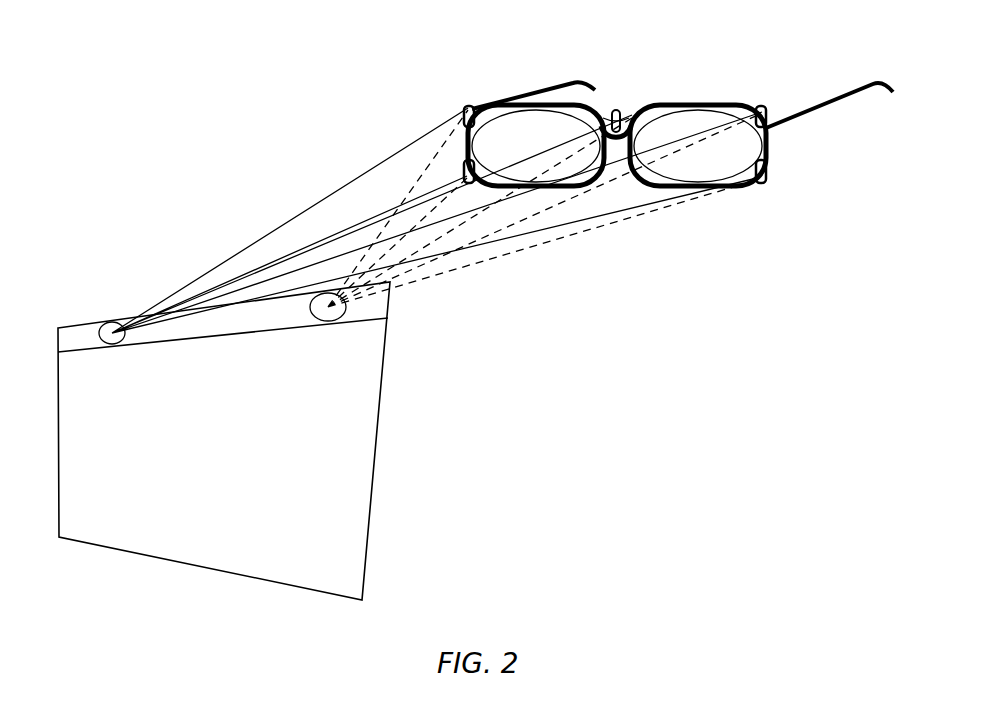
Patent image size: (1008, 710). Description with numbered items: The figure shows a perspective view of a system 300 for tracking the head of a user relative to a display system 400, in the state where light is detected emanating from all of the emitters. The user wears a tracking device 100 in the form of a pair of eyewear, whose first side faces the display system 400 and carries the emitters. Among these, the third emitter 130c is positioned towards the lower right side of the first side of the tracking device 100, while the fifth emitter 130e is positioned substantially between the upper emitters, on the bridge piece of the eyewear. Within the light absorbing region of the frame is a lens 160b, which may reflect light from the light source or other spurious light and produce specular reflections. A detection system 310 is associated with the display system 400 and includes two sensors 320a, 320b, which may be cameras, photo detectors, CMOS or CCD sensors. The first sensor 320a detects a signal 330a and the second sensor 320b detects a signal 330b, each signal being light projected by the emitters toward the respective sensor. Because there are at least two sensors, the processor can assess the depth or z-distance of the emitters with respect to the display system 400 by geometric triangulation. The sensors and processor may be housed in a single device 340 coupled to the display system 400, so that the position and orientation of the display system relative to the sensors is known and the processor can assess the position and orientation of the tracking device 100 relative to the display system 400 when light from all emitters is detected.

The tracking device 100 is at (545, 82).
The fifth emitter 130e is at (614, 109).
The lens 160b is at (698, 115).
The third emitter 130c is at (766, 186).
The system 300 is at (257, 154).
The signal 330b is at (340, 195).
The signal 330a is at (495, 258).
The detection system 310 is at (190, 264).
The single device 340 is at (75, 337).
The sensor 320b is at (118, 345).
The sensor 320a is at (328, 323).
The display system 400 is at (232, 452).